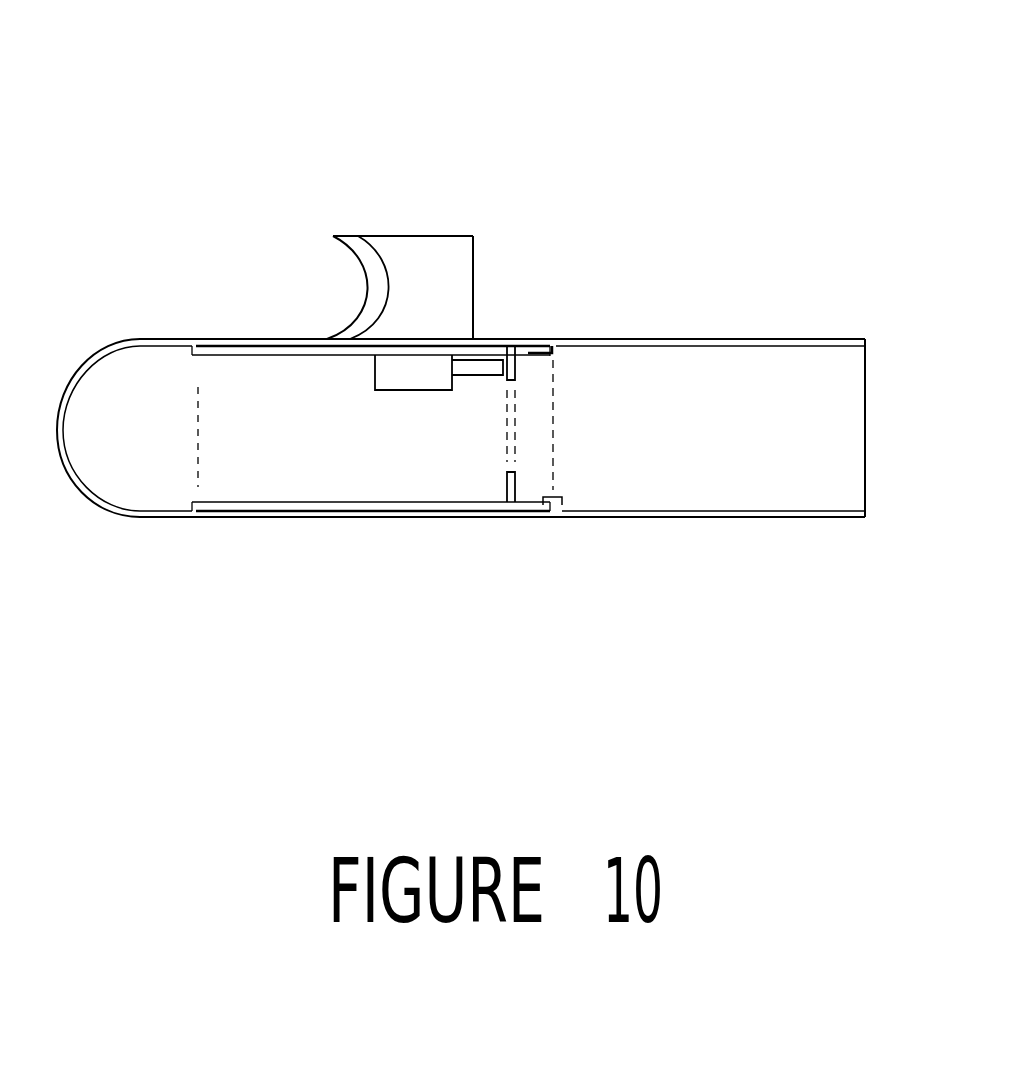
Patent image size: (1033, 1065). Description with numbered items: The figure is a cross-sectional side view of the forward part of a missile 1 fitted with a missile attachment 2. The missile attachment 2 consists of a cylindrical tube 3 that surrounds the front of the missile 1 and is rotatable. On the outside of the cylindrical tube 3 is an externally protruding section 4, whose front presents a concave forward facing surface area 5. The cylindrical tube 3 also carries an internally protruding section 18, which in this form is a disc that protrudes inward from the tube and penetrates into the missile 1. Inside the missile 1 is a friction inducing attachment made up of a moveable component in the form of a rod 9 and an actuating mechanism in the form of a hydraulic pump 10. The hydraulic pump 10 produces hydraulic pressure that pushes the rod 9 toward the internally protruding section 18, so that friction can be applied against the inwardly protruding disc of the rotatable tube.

The missile 1 is at (158, 520).
The missile attachment 2 is at (268, 462).
The cylindrical tube 3 is at (487, 520).
The externally protruding section 4 is at (383, 212).
The concave forward facing surface area 5 is at (330, 295).
The rod 9 is at (485, 377).
The hydraulic pump 10 is at (400, 378).
The internally protruding section 18 is at (515, 380).